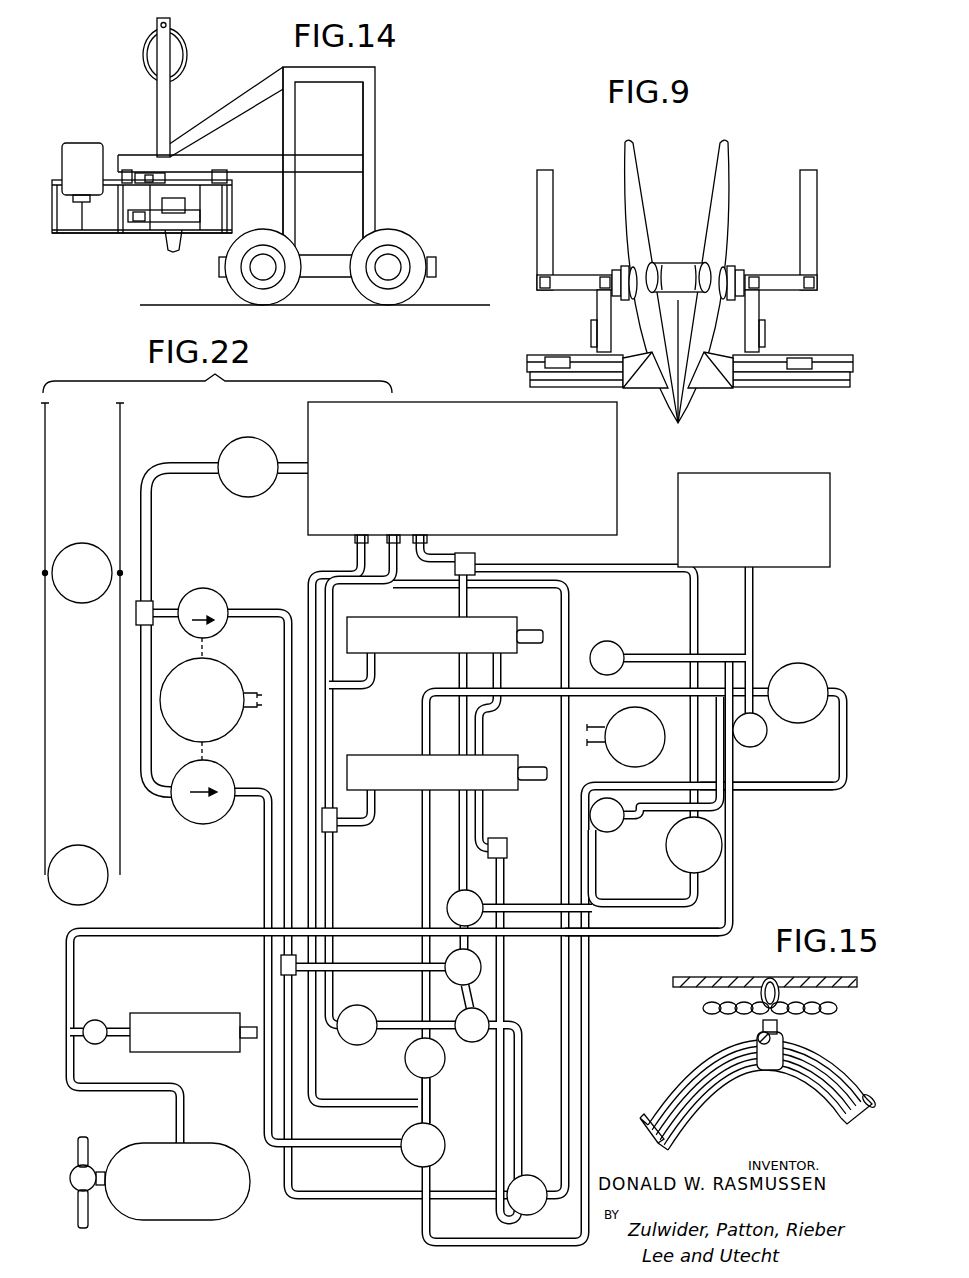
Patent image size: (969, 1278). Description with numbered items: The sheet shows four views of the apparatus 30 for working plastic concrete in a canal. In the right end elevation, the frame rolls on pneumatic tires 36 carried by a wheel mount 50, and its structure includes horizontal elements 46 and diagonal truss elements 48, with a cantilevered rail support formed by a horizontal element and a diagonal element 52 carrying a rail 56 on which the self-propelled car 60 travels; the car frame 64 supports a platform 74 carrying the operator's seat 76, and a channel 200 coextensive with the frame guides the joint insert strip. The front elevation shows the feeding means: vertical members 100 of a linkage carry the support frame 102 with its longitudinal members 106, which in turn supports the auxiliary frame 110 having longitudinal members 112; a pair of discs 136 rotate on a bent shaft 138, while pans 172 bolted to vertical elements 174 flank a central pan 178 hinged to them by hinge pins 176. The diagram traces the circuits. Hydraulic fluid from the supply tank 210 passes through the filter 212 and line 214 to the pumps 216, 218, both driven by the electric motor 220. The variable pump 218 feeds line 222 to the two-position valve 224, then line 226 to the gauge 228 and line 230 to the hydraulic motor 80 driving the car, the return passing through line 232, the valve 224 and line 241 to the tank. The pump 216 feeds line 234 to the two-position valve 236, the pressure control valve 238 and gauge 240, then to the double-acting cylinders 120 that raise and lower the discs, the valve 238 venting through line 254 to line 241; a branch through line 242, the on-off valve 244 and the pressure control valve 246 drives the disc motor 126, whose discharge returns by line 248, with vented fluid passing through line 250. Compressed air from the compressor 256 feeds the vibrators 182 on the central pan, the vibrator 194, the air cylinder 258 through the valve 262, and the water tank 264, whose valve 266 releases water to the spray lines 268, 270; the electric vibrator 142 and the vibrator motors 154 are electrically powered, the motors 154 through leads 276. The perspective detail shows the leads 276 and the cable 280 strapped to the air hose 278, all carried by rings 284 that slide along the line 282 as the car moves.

In FIG. 14, the apparatus 30 is at (417, 79).
In FIG. 14, the pneumatic tires 36 is at (415, 243).
In FIG. 14, the horizontal elements 46 is at (320, 80).
In FIG. 14, the diagonal truss elements 48 is at (284, 112).
In FIG. 14, the wheel mount 50 is at (192, 162).
In FIG. 14, the diagonal element 52 is at (244, 91).
In FIG. 14, the rail 56 is at (127, 170).
In FIG. 14, the self-propelled car 60 is at (119, 237).
In FIG. 14, the car frame 64 is at (83, 244).
In FIG. 14, the platform 74 is at (97, 226).
In FIG. 14, the seat 76 is at (81, 142).
In FIG. 14, the channel 200 is at (152, 173).
In FIG. 9, the vertical members 100 is at (553, 226).
In FIG. 9, the support frame 102 is at (827, 199).
In FIG. 9, the longitudinal members 106 is at (537, 283).
In FIG. 9, the auxiliary frame 110 is at (763, 268).
In FIG. 9, the longitudinal members 112 is at (611, 272).
In FIG. 9, the discs 136 is at (641, 181).
In FIG. 9, the shaft 138 is at (677, 262).
In FIG. 9, the pans 172 is at (530, 383).
In FIG. 9, the vertical elements 174 is at (597, 308).
In FIG. 9, the hinge pins 176 is at (540, 357).
In FIG. 9, the central pan 178 is at (651, 392).
In FIG. 22, the hydraulic motor 80 is at (818, 672).
In FIG. 22, the double-acting hydraulic cylinders 120 is at (447, 703).
In FIG. 22, the hydraulic motor 126 is at (723, 845).
In FIG. 22, the electric vibrator 142 is at (619, 742).
In FIG. 22, the electric vibrator motors 154 is at (83, 604).
In FIG. 22, the fluid actuated vibrators 182 is at (615, 645).
In FIG. 22, the fluid actuated vibrator 194 is at (766, 738).
In FIG. 22, the supply tank 210 is at (433, 403).
In FIG. 22, the filter 212 is at (250, 437).
In FIG. 22, the line 214 is at (153, 535).
In FIG. 22, the hydraulic pump 216 is at (212, 592).
In FIG. 22, the hydraulic pump 218 is at (219, 821).
In FIG. 22, the electric motor 220 is at (229, 663).
In FIG. 22, the line 222 is at (355, 1149).
In FIG. 22, the two-position valve 224 is at (440, 1158).
In FIG. 22, the line 226 is at (432, 1096).
In FIG. 22, the gauge 228 is at (405, 1060).
In FIG. 22, the line 230 is at (420, 865).
In FIG. 22, the line 232 is at (818, 791).
In FIG. 22, the line 234 is at (258, 607).
In FIG. 22, the two-position valve 236 is at (535, 1218).
In FIG. 22, the pressure control valve 238 is at (500, 1000).
In FIG. 22, the gauge 240 is at (368, 1007).
In FIG. 22, the line 241 is at (561, 889).
In FIG. 22, the line 242 is at (368, 967).
In FIG. 22, the on-off valve 244 is at (483, 967).
In FIG. 22, the pressure control valve 246 is at (447, 908).
In FIG. 22, the line 248 is at (610, 576).
In FIG. 22, the line 250 is at (486, 733).
In FIG. 22, the line 254 is at (490, 1025).
In FIG. 22, the compressor 256 is at (773, 473).
In FIG. 22, the air actuated cylinder 258 is at (188, 1013).
In FIG. 22, the valve 262 is at (97, 1018).
In FIG. 22, the water tank 264 is at (212, 1143).
In FIG. 22, the valve 266 is at (95, 1165).
In FIG. 22, the line 268 is at (88, 1226).
In FIG. 22, the line 270 is at (85, 1140).
In FIG. 22, the electrical leads 276 is at (120, 470).
In FIG. 15, the electrical leads 276 is at (835, 1059).
In FIG. 15, the air hose 278 is at (869, 1091).
In FIG. 22, the electrical cable 280 is at (253, 693).
In FIG. 15, the electrical cable 280 is at (711, 1083).
In FIG. 15, the line 282 is at (705, 977).
In FIG. 15, the rings 284 is at (768, 979).